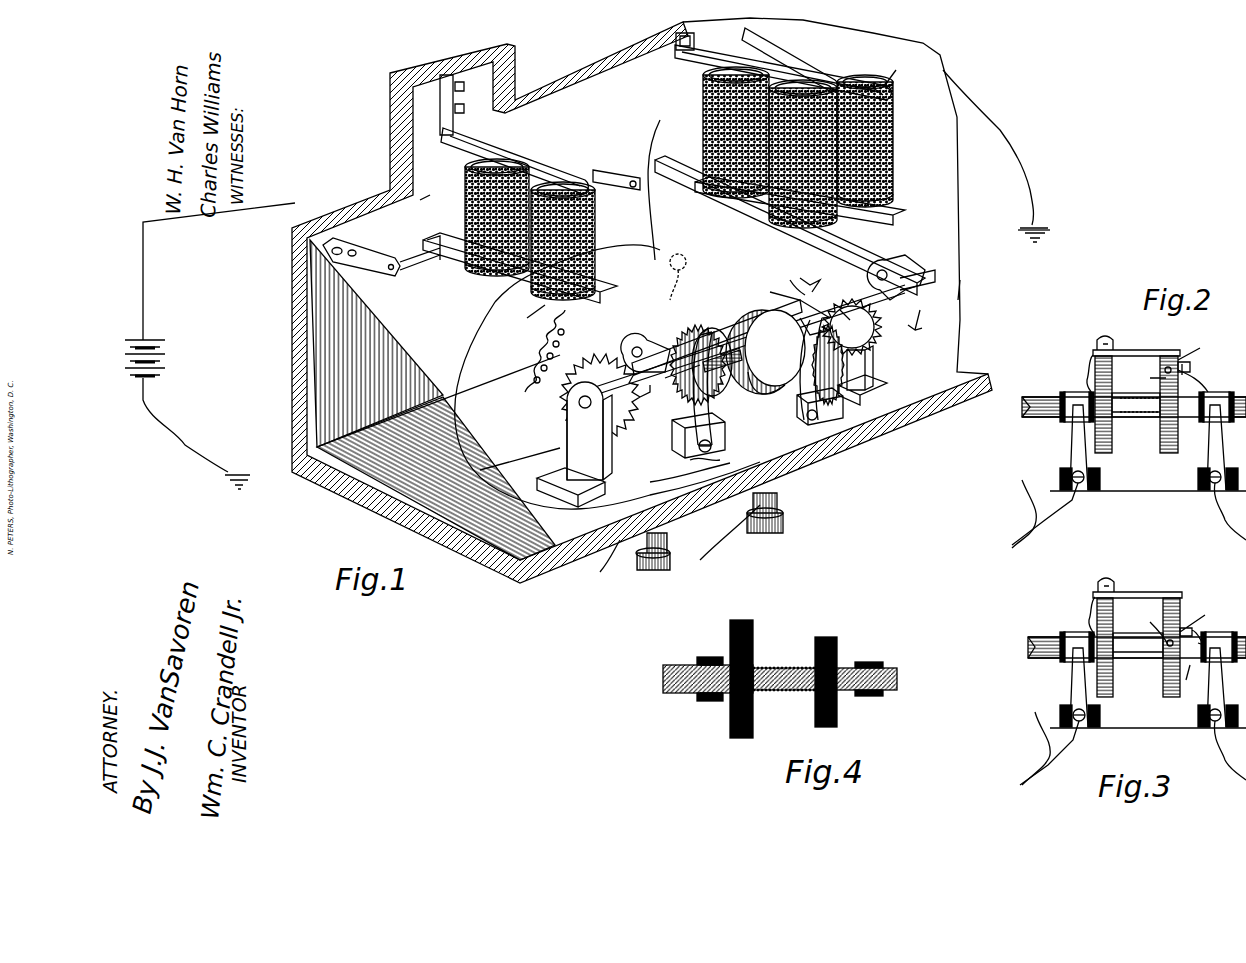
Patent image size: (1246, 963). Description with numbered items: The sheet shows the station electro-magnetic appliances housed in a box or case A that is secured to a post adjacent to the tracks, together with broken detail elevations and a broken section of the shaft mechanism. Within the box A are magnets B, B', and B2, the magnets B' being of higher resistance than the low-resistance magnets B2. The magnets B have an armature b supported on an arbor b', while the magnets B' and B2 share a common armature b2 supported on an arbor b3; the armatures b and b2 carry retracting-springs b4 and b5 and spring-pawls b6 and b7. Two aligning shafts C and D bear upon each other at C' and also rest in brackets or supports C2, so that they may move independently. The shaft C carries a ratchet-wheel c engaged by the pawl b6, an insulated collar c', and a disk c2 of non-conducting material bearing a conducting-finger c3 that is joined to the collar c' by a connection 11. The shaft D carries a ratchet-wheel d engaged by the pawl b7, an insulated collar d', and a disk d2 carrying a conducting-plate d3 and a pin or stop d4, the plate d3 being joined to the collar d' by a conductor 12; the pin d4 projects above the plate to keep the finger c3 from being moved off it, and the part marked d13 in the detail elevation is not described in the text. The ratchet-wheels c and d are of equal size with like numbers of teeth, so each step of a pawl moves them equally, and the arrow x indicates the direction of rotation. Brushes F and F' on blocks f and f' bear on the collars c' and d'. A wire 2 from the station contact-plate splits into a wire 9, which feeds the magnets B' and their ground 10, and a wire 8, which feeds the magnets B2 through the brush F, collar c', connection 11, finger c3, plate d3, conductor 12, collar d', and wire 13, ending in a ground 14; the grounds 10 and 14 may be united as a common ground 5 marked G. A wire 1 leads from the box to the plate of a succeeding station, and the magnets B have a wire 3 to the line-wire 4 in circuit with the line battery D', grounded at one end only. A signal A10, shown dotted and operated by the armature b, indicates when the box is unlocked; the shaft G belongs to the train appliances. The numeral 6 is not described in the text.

In FIG. 1, the box or case A is at (642, 300).
In FIG. 1, the signal A10 is at (699, 255).
In FIG. 1, the magnets B is at (520, 189).
In FIG. 1, the high-resistance magnets B' is at (724, 132).
In FIG. 1, the low-resistance magnets B2 is at (797, 128).
In FIG. 1, the armature b is at (531, 320).
In FIG. 1, the arbor b' is at (381, 266).
In FIG. 1, the common armature b2 is at (790, 225).
In FIG. 1, the arbor b3 is at (619, 169).
In FIG. 1, the retracting-spring b4 is at (534, 351).
In FIG. 1, the retracting-spring b5 is at (803, 276).
In FIG. 1, the spring-pawl b6 is at (649, 321).
In FIG. 1, the spring-pawl b7 is at (901, 264).
In FIG. 1, the shaft C is at (750, 351).
In FIG. 2, the shaft C is at (1124, 417).
In FIG. 3, the shaft C is at (1124, 649).
In FIG. 4, the shaft C is at (695, 679).
In FIG. 1, the bearing C' is at (765, 352).
In FIG. 2, the bearing C' is at (1136, 417).
In FIG. 3, the bearing C' is at (1138, 645).
In FIG. 4, the bearing C' is at (784, 692).
In FIG. 1, the brackets or supports C2 is at (723, 426).
In FIG. 1, the ratchet-wheel c is at (605, 397).
In FIG. 1, the insulated collar c' is at (722, 374).
In FIG. 2, the insulated collar c' is at (1063, 396).
In FIG. 3, the insulated collar c' is at (1062, 633).
In FIG. 4, the insulated collar c' is at (710, 665).
In FIG. 1, the disk c2 is at (713, 374).
In FIG. 2, the disk c2 is at (1111, 411).
In FIG. 3, the disk c2 is at (1112, 654).
In FIG. 4, the disk c2 is at (747, 665).
In FIG. 1, the conducting-finger c3 is at (717, 331).
In FIG. 2, the conducting-finger c3 is at (1136, 341).
In FIG. 3, the conducting-finger c3 is at (1137, 585).
In FIG. 4, the shaft D is at (840, 675).
In FIG. 1, the main or local battery or generator D' is at (176, 356).
In FIG. 2, the ratchet-wheel d is at (1222, 394).
In FIG. 3, the ratchet-wheel d is at (1223, 635).
In FIG. 1, the insulated collar d' is at (855, 327).
In FIG. 4, the insulated collar d' is at (870, 664).
In FIG. 1, the disk d2 is at (810, 369).
In FIG. 2, the disk d2 is at (1178, 408).
In FIG. 3, the disk d2 is at (1164, 651).
In FIG. 4, the disk d2 is at (833, 667).
In FIG. 1, the conducting-plate d3 is at (796, 295).
In FIG. 2, the conducting-plate d3 is at (1196, 350).
In FIG. 1, the pin or stop d4 is at (810, 328).
In FIG. 2, the pin or stop d4 is at (1168, 377).
In FIG. 3, the pin or stop d4 is at (1153, 628).
In FIG. 3, the pin d13 is at (1201, 620).
In FIG. 1, the metal brush or contacting-plate F is at (716, 388).
In FIG. 2, the metal brush or contacting-plate F is at (1065, 447).
In FIG. 3, the metal brush or contacting-plate F is at (1069, 687).
In FIG. 1, the metal brush or contacting-plate F' is at (802, 383).
In FIG. 2, the metal brush or contacting-plate F' is at (1226, 447).
In FIG. 3, the metal brush or contacting-plate F' is at (1226, 687).
In FIG. 1, the block f is at (687, 435).
In FIG. 2, the block f is at (1087, 479).
In FIG. 3, the block f is at (1083, 722).
In FIG. 1, the block f' is at (820, 406).
In FIG. 2, the block f' is at (1208, 479).
In FIG. 3, the block f' is at (1206, 716).
In FIG. 1, the shaft G is at (1034, 223).
In FIG. 1, the direction of rotation x is at (924, 319).
In FIG. 1, the wire 1 is at (550, 523).
In FIG. 1, the wire or connector 2 is at (705, 509).
In FIG. 2, the wire or connector 2 is at (1013, 550).
In FIG. 3, the wire or connector 2 is at (1023, 784).
In FIG. 1, the wire 3 is at (417, 194).
In FIG. 1, the line-wire 4 is at (219, 346).
In FIG. 1, the common ground 5 is at (995, 156).
In FIG. 1, the wire 6 is at (677, 294).
In FIG. 1, the wire 8 is at (697, 461).
In FIG. 2, the wire 8 is at (1045, 514).
In FIG. 3, the wire 8 is at (1049, 753).
In FIG. 1, the wire 9 is at (607, 305).
In FIG. 2, the wire 9 is at (1024, 514).
In FIG. 3, the wire 9 is at (1032, 748).
In FIG. 1, the ground 10 is at (886, 94).
In FIG. 2, the wire or connection 11 is at (1078, 375).
In FIG. 3, the wire or connection 11 is at (1079, 616).
In FIG. 1, the wire or conductor 12 is at (846, 306).
In FIG. 2, the wire or conductor 12 is at (1207, 381).
In FIG. 3, the wire or conductor 12 is at (1193, 677).
In FIG. 1, the wire 13 is at (973, 293).
In FIG. 2, the wire 13 is at (1228, 513).
In FIG. 3, the wire 13 is at (1230, 755).
In FIG. 1, the ground 14 is at (903, 68).